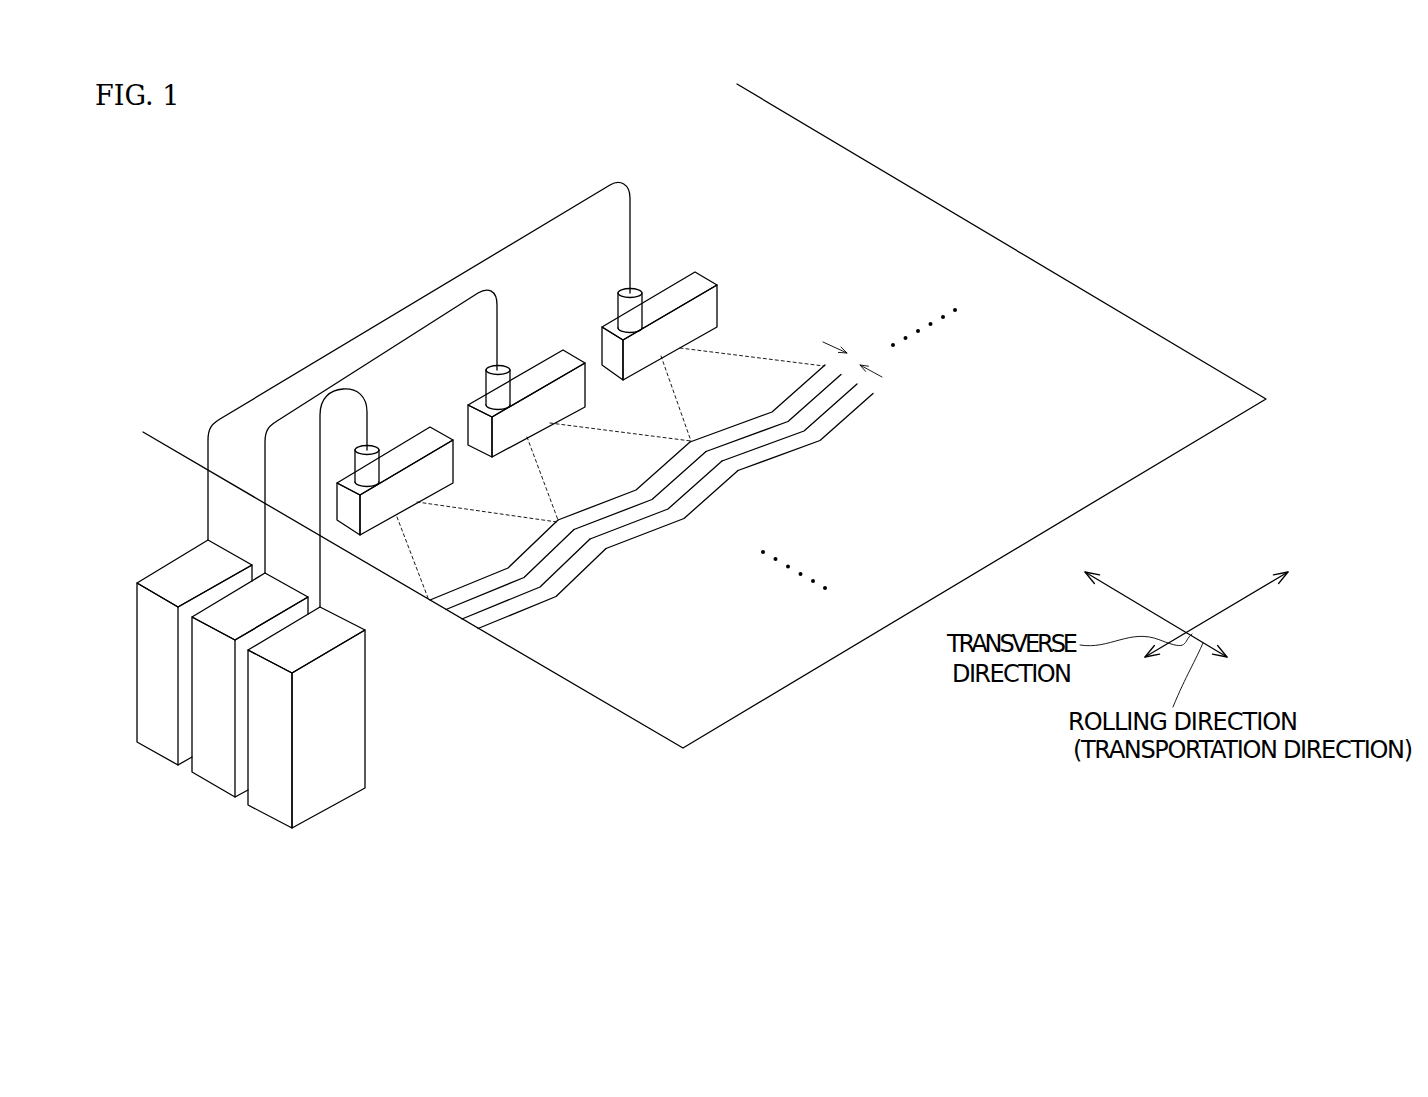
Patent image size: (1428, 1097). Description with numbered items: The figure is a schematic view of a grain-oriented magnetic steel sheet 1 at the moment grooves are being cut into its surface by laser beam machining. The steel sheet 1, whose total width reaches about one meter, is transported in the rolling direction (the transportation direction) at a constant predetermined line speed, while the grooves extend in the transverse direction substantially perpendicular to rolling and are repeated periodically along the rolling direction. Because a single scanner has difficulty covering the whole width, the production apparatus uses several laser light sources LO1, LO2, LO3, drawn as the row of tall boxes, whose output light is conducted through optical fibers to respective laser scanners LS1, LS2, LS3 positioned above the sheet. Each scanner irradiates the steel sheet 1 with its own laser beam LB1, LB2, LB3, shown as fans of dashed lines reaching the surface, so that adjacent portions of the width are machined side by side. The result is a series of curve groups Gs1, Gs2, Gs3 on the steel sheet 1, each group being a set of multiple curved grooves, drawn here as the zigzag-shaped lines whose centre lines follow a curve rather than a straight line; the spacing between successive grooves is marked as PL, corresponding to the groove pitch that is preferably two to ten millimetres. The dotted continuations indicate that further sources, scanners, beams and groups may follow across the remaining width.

The steel sheet 1 is at (1087, 307).
The laser light source LO1 is at (273, 820).
The laser light source LO2 is at (217, 788).
The laser light source LO3 is at (160, 756).
The laser scanner LS1 is at (398, 445).
The laser scanner LS2 is at (532, 367).
The laser scanner LS3 is at (663, 290).
The laser beam LB1 is at (485, 511).
The laser beam LB2 is at (615, 432).
The laser beam LB3 is at (748, 356).
The curve group Gs1 is at (622, 560).
The curve group Gs2 is at (756, 480).
The curve group Gs3 is at (889, 403).
The groove pitch PL is at (852, 357).